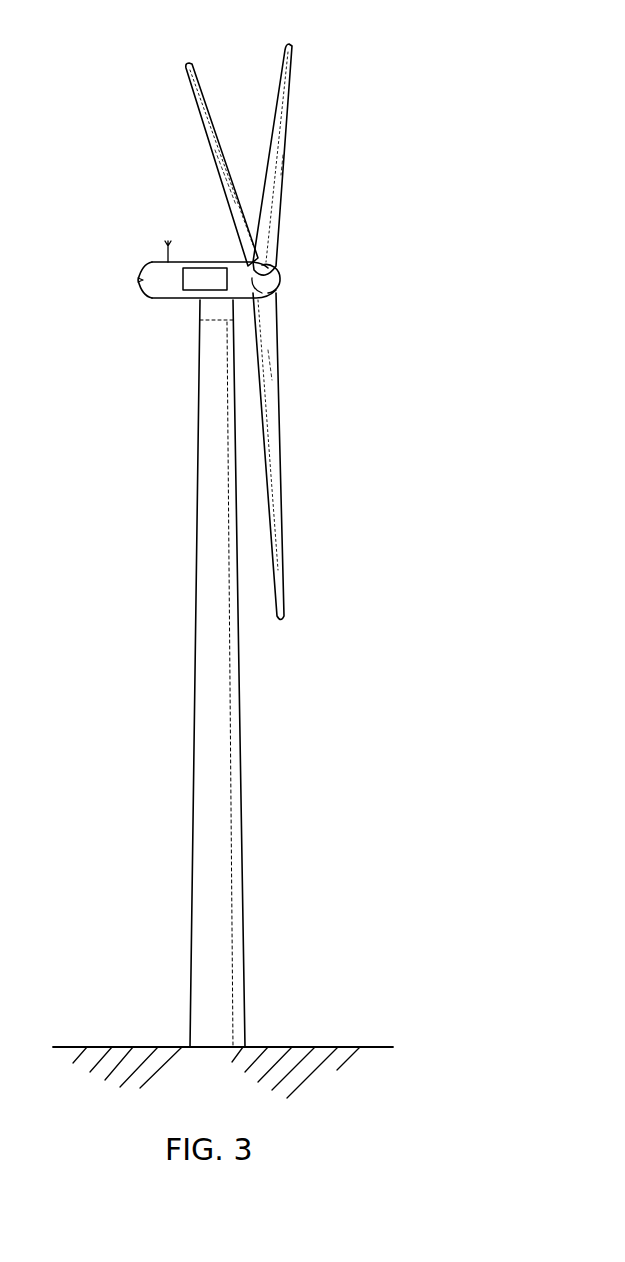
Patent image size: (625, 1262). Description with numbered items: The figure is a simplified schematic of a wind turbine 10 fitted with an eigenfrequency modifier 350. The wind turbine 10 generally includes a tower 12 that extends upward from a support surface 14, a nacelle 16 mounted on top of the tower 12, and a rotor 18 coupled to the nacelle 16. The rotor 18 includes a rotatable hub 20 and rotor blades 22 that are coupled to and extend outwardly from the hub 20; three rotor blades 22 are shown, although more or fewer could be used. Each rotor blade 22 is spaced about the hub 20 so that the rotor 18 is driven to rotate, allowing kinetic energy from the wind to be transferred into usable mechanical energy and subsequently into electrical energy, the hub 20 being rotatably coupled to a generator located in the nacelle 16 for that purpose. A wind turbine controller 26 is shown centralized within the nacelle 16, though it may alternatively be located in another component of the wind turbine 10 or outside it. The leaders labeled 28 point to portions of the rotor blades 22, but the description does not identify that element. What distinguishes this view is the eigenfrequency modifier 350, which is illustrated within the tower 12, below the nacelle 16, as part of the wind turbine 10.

The wind turbine 10 is at (395, 113).
The tower 12 is at (205, 778).
The support surface 14 is at (125, 1047).
The nacelle 16 is at (180, 303).
The rotor 18 is at (290, 260).
The rotatable hub 20 is at (285, 287).
The rotor blade 22 is at (278, 83).
The wind turbine controller 26 is at (207, 262).
The blade surface 28 is at (223, 197).
The eigenfrequency modifier 350 is at (217, 322).